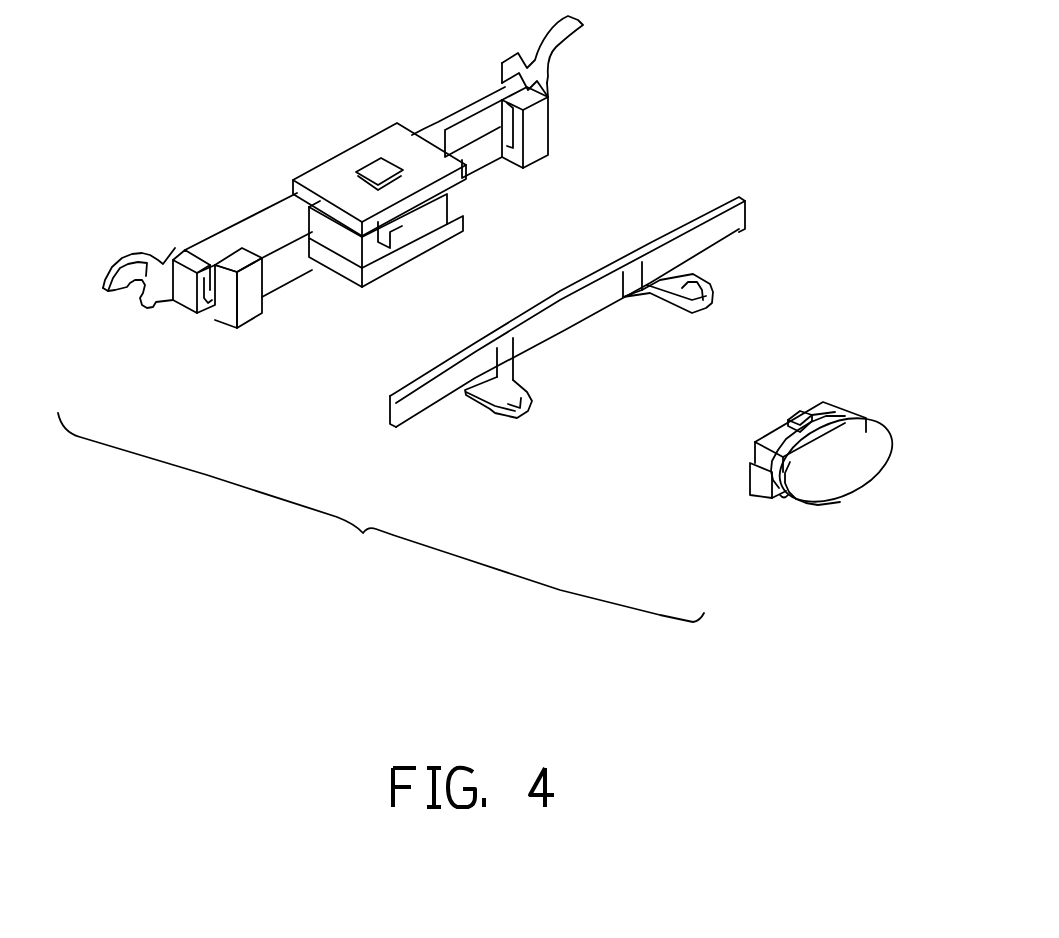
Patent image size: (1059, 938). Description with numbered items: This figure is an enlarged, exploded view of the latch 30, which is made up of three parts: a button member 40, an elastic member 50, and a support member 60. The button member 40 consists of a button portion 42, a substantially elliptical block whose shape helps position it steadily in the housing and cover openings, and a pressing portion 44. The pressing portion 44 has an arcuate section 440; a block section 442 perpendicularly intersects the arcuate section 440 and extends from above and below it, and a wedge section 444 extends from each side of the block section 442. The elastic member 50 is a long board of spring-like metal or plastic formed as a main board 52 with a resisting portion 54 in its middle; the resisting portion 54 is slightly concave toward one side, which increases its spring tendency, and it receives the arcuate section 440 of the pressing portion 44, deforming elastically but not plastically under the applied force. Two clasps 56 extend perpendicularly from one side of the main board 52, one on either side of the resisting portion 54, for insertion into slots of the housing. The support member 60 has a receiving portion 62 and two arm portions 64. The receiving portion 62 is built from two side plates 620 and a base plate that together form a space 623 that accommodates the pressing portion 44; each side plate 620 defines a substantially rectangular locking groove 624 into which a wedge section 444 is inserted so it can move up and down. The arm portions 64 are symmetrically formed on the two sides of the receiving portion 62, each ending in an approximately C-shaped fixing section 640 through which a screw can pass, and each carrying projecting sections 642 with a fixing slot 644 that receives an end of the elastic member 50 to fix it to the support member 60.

The latch 30 is at (381, 517).
The button member 40 is at (771, 530).
The button portion 42 is at (855, 440).
The pressing portion 44 is at (736, 344).
The arcuate section 440 is at (760, 480).
The block section 442 is at (827, 415).
The wedge section 444 is at (792, 414).
The elastic member 50 is at (418, 442).
The main board 52 is at (707, 233).
The resisting portion 54 is at (567, 307).
The clasp 56 is at (683, 290).
The support member 60 is at (183, 345).
The receiving portion 62 is at (442, 247).
The side plate 620 is at (327, 173).
The space 623 is at (393, 252).
The locking groove 624 is at (367, 166).
The arm portion 64 is at (248, 218).
The fixing section 640 is at (153, 302).
The projecting section 642 is at (230, 315).
The fixing slot 644 is at (206, 292).